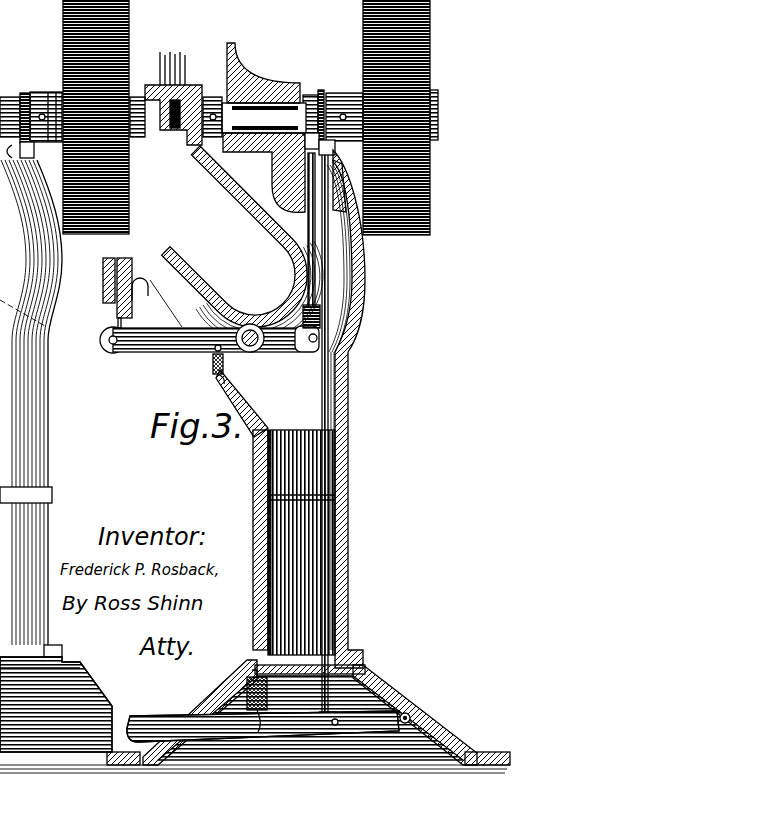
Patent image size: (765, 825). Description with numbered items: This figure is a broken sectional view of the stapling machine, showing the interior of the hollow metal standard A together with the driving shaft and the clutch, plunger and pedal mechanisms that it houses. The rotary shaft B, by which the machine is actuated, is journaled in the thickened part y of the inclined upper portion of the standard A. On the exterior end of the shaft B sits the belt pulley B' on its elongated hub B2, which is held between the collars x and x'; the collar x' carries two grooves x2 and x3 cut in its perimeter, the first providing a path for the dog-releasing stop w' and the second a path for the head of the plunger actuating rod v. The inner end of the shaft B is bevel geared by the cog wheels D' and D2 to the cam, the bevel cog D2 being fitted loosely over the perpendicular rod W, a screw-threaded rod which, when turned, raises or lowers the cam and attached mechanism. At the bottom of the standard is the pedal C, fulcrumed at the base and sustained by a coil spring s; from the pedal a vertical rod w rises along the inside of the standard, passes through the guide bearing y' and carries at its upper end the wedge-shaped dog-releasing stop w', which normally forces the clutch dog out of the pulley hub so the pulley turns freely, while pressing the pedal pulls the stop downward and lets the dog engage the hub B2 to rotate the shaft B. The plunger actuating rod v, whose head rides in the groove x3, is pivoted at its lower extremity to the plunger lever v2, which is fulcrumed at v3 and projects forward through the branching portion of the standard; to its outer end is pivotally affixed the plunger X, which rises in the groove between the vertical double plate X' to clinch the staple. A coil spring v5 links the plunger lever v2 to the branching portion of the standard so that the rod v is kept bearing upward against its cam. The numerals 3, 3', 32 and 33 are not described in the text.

The elongated hub B2 is at (60, 96).
The belt pulley B' is at (396, 117).
The rotary shaft B is at (241, 69).
The collar x is at (294, 116).
The collar x' is at (196, 100).
The groove x2 is at (326, 89).
The groove x3 is at (310, 96).
The perpendicular rod W is at (160, 86).
The bevel cog D2 is at (186, 88).
The bevel cog D' is at (211, 96).
The thickened part y is at (264, 127).
The guide bearing y' is at (347, 186).
The vertical rod w is at (341, 438).
The dog-releasing stop w' is at (183, 150).
The hollow metal standard A is at (347, 387).
The standard 3 is at (207, 552).
The base 3' is at (310, 711).
The arm 32 is at (248, 403).
The arm extension 33 is at (133, 268).
The plunger actuating rod v is at (312, 251).
The plunger lever v2 is at (150, 348).
The fulcrum v3 is at (252, 347).
The coil spring v5 is at (214, 361).
The plunger X is at (100, 295).
The vertical double plate X' is at (91, 277).
The coil spring s is at (212, 698).
The pedal C is at (142, 730).